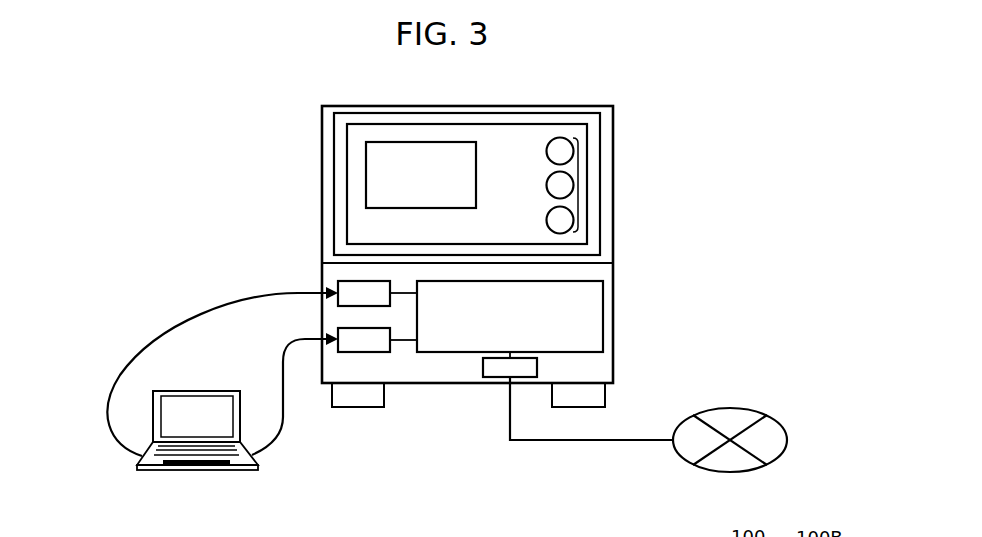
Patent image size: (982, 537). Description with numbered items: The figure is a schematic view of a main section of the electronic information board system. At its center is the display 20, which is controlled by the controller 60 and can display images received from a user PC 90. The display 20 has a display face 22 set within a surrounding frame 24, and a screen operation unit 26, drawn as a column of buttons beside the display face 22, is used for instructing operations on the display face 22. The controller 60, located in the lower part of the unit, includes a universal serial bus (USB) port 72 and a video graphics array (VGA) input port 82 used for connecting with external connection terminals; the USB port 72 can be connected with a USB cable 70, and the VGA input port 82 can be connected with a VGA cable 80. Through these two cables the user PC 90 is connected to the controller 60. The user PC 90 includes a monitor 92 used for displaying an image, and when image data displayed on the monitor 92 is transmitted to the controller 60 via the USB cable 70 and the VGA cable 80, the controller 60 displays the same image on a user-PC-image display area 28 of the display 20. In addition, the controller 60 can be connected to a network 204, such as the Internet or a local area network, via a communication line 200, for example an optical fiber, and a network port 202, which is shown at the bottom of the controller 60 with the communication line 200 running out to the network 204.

The display 20 is at (552, 95).
The display face 22 is at (495, 137).
The housing frame 24 is at (608, 145).
The screen operation unit 26 is at (579, 184).
The user-PC-image display area 28 is at (476, 194).
The controller 60 is at (603, 305).
The universal serial bus (USB) port 72 is at (329, 327).
The video graphics array (VGA) input port 82 is at (331, 284).
The USB cable 70 is at (284, 426).
The VGA cable 80 is at (149, 338).
The user PC 90 is at (177, 423).
The monitor 92 is at (198, 398).
The communication line 200 is at (593, 441).
The network port 202 is at (498, 378).
The network 204 is at (732, 409).